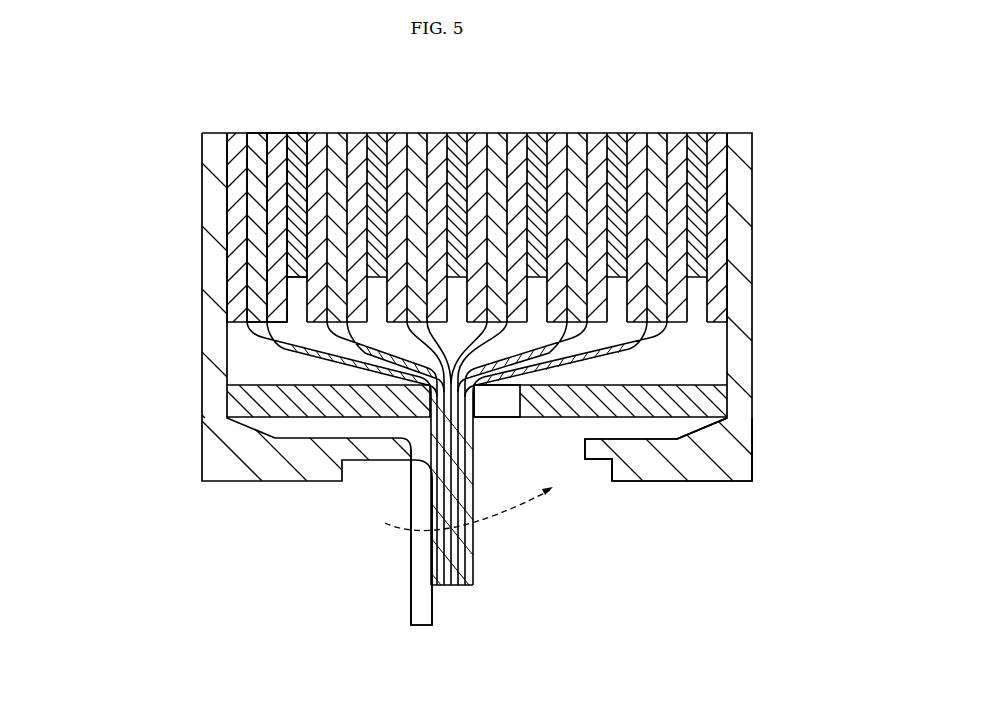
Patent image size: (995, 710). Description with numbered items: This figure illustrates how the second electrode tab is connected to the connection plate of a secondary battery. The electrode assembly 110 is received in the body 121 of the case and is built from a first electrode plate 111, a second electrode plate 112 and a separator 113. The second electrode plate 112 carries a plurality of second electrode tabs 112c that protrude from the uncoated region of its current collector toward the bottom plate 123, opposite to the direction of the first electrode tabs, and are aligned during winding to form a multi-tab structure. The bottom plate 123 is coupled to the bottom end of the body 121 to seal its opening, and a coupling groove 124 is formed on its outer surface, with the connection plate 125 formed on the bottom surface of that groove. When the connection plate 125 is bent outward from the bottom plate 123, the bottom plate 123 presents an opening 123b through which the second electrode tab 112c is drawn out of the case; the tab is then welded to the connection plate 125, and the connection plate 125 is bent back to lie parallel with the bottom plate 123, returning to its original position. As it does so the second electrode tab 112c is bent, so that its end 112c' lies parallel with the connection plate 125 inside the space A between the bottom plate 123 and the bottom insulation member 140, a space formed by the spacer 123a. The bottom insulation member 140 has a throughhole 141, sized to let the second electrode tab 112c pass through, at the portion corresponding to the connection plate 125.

The electrode assembly 110 is at (386, 227).
The first electrode plate 111 is at (295, 197).
The second electrode plate 112 is at (262, 233).
The separator 113 is at (278, 271).
The second electrode tab 112c is at (387, 359).
The end of second electrode tab 112c' is at (462, 525).
The body 121 is at (750, 231).
The bottom plate 123 is at (662, 470).
The spacer 123a is at (752, 458).
The opening 123b is at (537, 458).
The coupling groove 124 is at (606, 472).
The connection plate 125 is at (418, 567).
The bottom insulation member 140 is at (750, 403).
The throughhole 141 is at (506, 400).
The space A is at (660, 430).